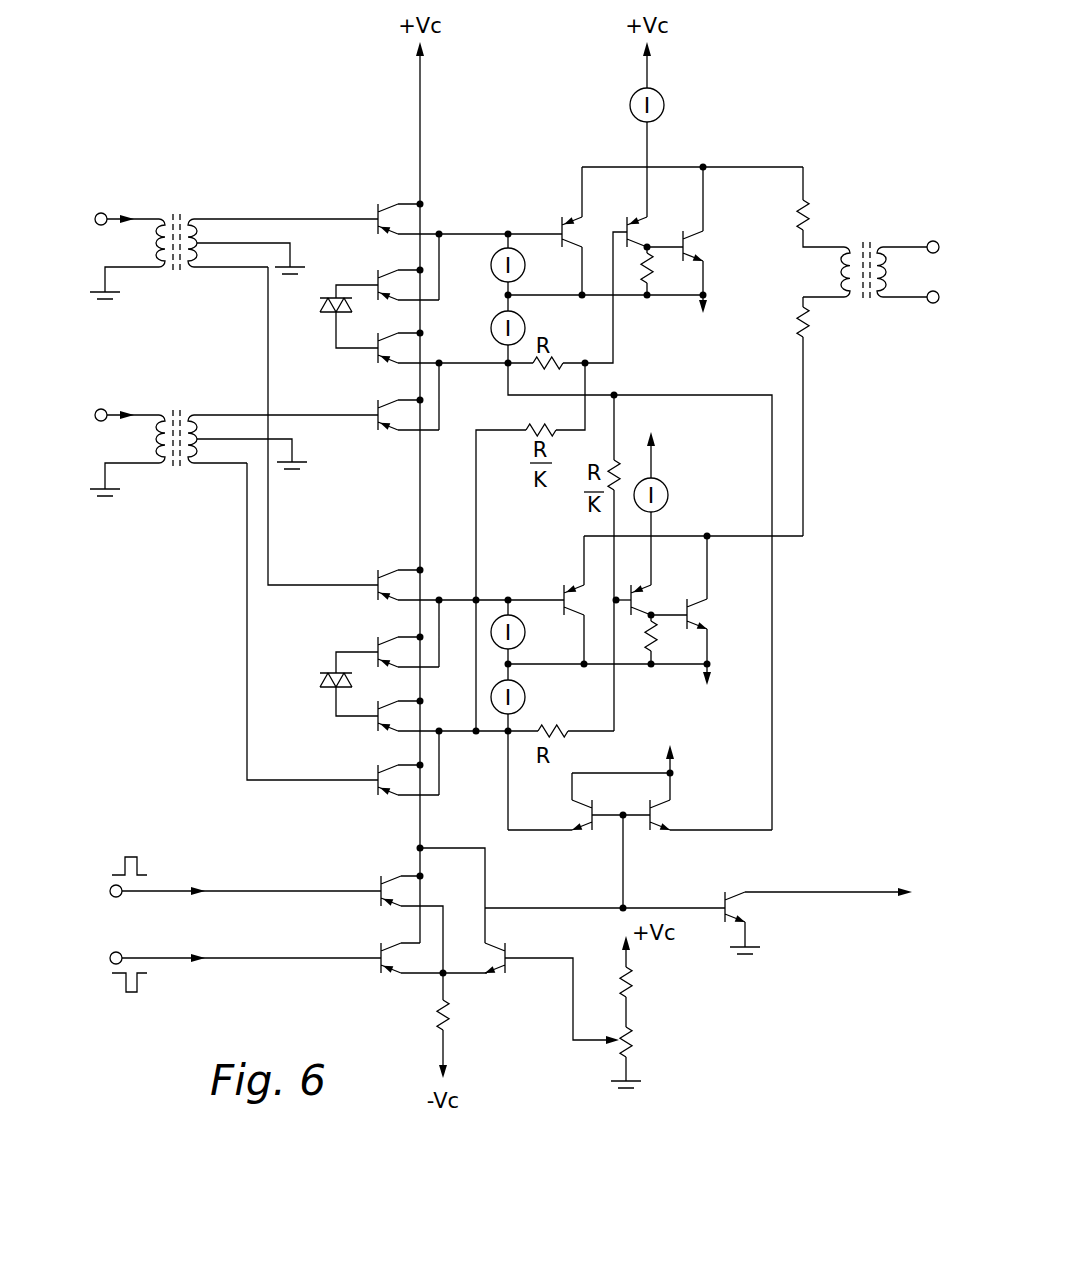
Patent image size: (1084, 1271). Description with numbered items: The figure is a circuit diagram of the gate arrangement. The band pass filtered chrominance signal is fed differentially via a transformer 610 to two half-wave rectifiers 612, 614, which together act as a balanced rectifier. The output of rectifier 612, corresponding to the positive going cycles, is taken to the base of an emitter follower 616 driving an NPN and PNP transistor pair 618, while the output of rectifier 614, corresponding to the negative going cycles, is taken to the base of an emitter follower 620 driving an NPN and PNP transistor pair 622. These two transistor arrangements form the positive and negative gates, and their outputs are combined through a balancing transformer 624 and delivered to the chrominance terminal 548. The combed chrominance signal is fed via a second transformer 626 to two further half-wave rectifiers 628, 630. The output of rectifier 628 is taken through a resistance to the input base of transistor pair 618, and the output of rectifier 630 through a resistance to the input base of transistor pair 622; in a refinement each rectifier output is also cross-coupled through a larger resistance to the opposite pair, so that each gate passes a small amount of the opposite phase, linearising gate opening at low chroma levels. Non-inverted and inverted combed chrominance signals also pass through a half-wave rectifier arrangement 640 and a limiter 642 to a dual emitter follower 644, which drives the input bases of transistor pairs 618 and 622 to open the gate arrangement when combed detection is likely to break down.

The transformer 610 is at (177, 213).
The transformer 626 is at (177, 409).
The half-wave rectifier 612 is at (405, 247).
The half-wave rectifier 628 is at (405, 383).
The half-wave rectifier 614 is at (410, 615).
The half-wave rectifier 630 is at (410, 750).
The emitter follower 616 is at (568, 207).
The NPN and PNP transistor pair 618 is at (662, 220).
The emitter follower 620 is at (572, 580).
The NPN and PNP transistor pair 622 is at (663, 585).
The balancing transformer 624 is at (844, 256).
The chrominance terminal 548 is at (917, 257).
The half-wave rectifier arrangement 640 is at (410, 920).
The limiter 642 is at (489, 986).
The dual emitter follower 644 is at (632, 830).